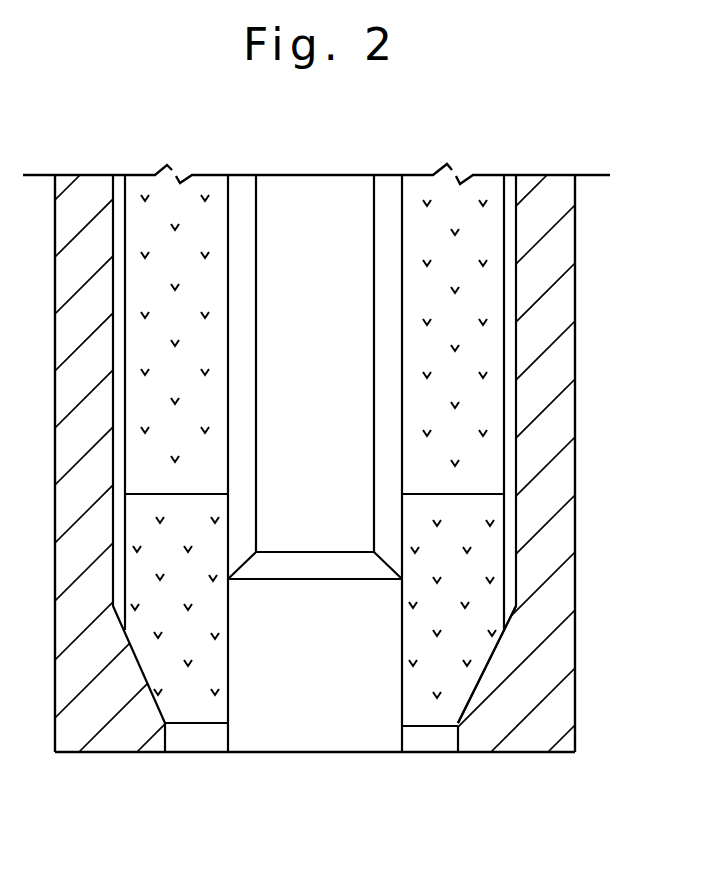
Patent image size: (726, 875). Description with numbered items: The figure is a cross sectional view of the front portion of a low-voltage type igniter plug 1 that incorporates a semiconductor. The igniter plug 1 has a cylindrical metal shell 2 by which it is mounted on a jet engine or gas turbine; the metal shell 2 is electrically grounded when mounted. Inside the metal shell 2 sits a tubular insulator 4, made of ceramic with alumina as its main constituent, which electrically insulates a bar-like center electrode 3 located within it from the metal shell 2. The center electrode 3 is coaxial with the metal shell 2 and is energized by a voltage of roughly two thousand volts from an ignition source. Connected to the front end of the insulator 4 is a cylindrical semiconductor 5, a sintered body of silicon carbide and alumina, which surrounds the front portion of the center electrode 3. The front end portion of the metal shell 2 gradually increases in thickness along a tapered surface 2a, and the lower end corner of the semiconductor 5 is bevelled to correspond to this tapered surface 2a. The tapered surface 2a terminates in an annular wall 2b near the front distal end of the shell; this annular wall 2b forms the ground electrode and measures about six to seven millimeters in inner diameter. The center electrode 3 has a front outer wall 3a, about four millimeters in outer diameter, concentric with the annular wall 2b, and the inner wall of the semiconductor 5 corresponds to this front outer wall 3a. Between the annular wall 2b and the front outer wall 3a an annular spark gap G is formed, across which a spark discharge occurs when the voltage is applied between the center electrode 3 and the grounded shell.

The low-voltage type igniter plug 1 is at (586, 255).
The metal shell 2 is at (560, 410).
The tapered surface 2a is at (480, 672).
The annular wall 2b is at (455, 742).
The center electrode 3 is at (375, 328).
The front outer wall 3a is at (403, 738).
The tubular insulator 4 is at (485, 292).
The cylindrical semiconductor 5 is at (485, 552).
The annular spark gap G is at (226, 757).